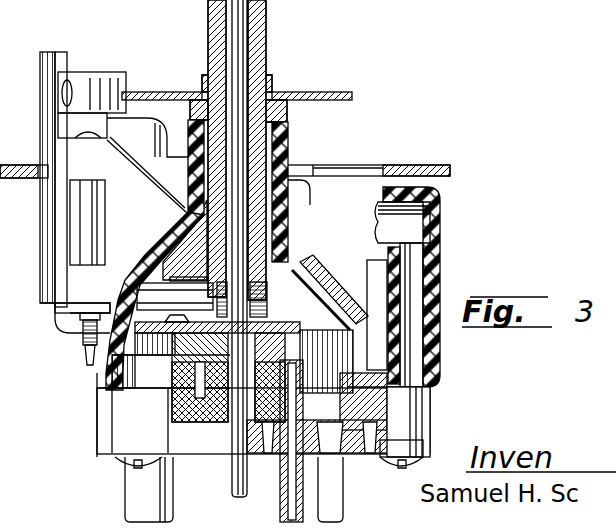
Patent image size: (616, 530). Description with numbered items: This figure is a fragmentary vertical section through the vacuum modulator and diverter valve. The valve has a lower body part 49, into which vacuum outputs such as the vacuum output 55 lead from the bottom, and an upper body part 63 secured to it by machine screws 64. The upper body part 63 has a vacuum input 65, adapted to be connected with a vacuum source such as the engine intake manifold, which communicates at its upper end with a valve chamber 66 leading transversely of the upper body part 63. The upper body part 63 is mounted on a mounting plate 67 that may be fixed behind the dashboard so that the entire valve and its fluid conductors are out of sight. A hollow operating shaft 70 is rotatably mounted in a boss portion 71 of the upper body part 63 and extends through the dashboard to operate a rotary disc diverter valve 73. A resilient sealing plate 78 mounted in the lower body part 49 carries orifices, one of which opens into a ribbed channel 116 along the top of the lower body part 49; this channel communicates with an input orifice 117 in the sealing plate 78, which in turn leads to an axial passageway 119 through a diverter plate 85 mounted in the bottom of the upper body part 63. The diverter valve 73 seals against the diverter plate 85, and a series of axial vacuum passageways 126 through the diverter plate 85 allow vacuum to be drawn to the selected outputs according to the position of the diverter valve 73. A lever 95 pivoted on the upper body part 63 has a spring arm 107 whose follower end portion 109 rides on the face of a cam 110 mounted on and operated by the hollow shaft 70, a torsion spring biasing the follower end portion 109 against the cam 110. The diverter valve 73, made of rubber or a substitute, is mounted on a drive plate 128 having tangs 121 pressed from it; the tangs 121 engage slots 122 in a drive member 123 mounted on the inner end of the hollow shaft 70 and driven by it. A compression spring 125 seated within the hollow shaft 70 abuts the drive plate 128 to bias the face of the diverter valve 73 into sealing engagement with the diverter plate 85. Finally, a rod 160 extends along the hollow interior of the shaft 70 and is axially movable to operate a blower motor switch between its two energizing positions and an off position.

The lower body part 49 is at (430, 428).
The vacuum output 55 is at (283, 513).
The upper body part 63 is at (440, 253).
The machine screws 64 is at (130, 460).
The vacuum input 65 is at (440, 366).
The valve chamber 66 is at (407, 227).
The mounting plate 67 is at (422, 167).
The hollow operating shaft 70 is at (268, 40).
The boss portion 71 is at (288, 152).
The rotary disc diverter valve 73 is at (292, 327).
The resilient sealing plate 78 is at (177, 397).
The diverter plate 85 is at (408, 422).
The lever 95 is at (48, 53).
The spring arm 107 is at (85, 82).
The follower end portion 109 is at (125, 92).
The cam 110 is at (322, 92).
The ribbed channel 116 is at (163, 410).
The input orifice 117 is at (210, 420).
The axial passageway 119 is at (175, 380).
The tangs 121 is at (328, 260).
The slots 122 is at (343, 287).
The drive member 123 is at (290, 318).
The compression spring 125 is at (130, 288).
The axial vacuum passageways 126 is at (343, 417).
The drive plate 128 is at (80, 335).
The rod 160 is at (233, 475).